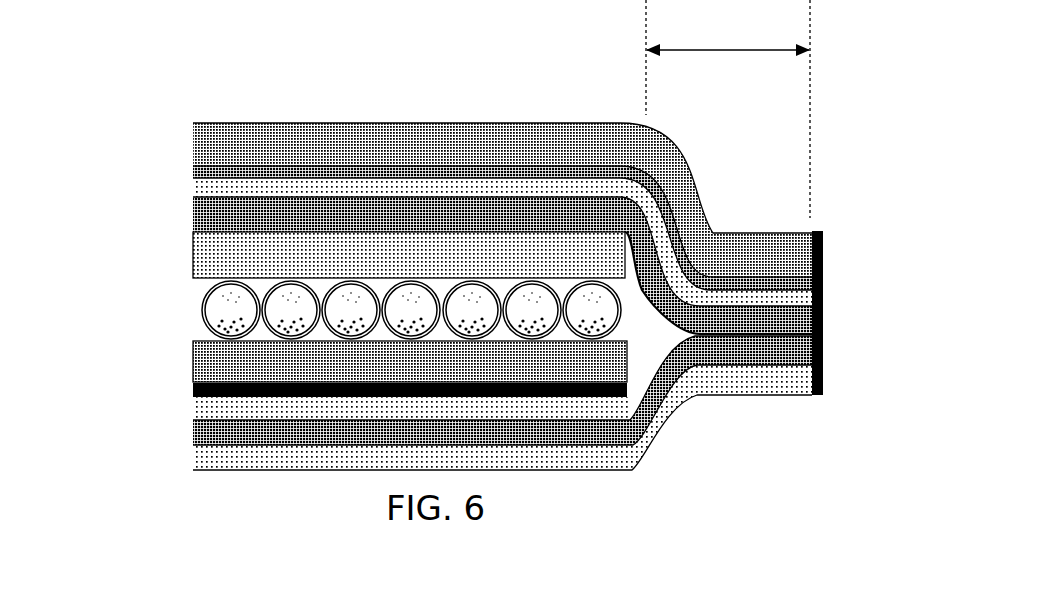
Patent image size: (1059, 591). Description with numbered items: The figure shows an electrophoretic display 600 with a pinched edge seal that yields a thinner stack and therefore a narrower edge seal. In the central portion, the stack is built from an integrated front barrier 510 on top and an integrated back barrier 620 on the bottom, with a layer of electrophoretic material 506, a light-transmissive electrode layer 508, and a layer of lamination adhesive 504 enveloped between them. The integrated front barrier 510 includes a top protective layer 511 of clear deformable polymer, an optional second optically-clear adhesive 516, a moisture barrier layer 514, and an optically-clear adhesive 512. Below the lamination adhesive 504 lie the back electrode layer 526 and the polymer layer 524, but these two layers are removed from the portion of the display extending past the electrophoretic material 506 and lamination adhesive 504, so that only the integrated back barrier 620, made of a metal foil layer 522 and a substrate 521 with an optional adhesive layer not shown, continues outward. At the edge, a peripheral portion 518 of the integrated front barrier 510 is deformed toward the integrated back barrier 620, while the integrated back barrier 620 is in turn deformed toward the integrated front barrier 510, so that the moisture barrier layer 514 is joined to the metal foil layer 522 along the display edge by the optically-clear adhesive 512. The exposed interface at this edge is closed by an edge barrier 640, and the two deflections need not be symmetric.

The electrophoretic display 600 is at (393, 86).
The top protective layer 511 is at (267, 146).
The second optically-clear adhesive 516 is at (240, 172).
The moisture barrier layer 514 is at (218, 186).
The optically-clear adhesive 512 is at (240, 213).
The light-transmissive electrode layer 508 is at (220, 252).
The layer of electrophoretic material 506 is at (229, 308).
The lamination adhesive 504 is at (215, 360).
The back electrode layer 526 is at (195, 388).
The polymer layer 524 is at (215, 405).
The metal foil layer 522 is at (190, 440).
The substrate 521 is at (267, 455).
The integrated front barrier 510 is at (837, 235).
The integrated back barrier 620 is at (837, 335).
The edge seal 640 is at (823, 398).
The peripheral portion 518 is at (830, 480).